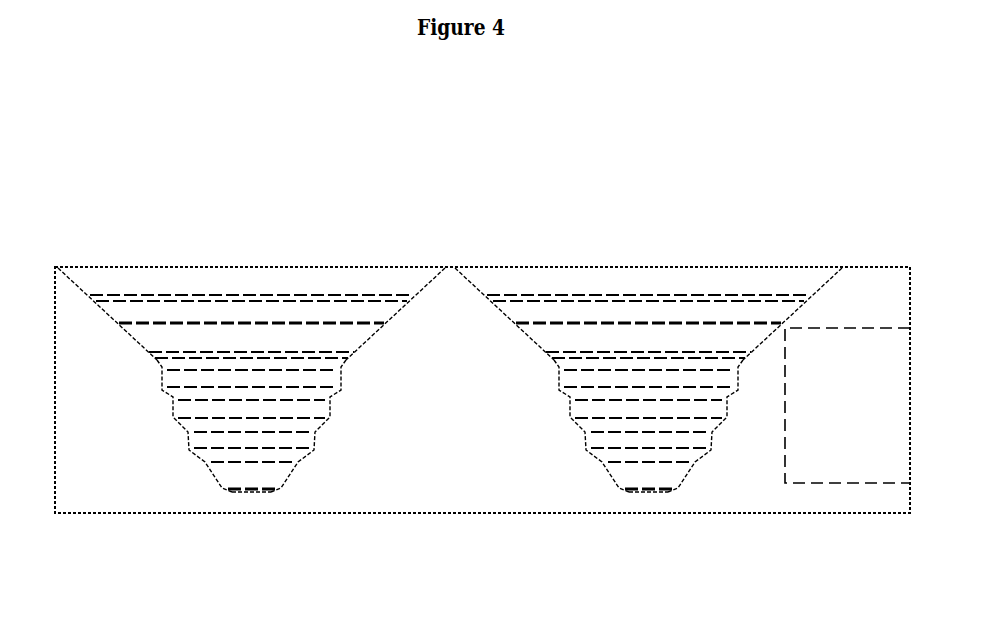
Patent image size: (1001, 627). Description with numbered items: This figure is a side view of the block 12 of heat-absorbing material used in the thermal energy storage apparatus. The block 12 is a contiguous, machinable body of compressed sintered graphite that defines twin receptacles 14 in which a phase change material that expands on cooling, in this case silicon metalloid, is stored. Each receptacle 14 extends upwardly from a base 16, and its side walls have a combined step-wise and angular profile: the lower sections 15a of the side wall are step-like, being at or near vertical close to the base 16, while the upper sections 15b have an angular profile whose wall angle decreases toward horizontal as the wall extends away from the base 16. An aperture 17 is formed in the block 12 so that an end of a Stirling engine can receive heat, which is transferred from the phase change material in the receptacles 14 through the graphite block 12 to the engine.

The block 12 is at (109, 166).
The receptacle 14 is at (249, 245).
The lower sections of the side wall 15a is at (175, 440).
The upper sections of the side wall 15b is at (90, 322).
The base 16 is at (248, 497).
The aperture 17 is at (909, 396).